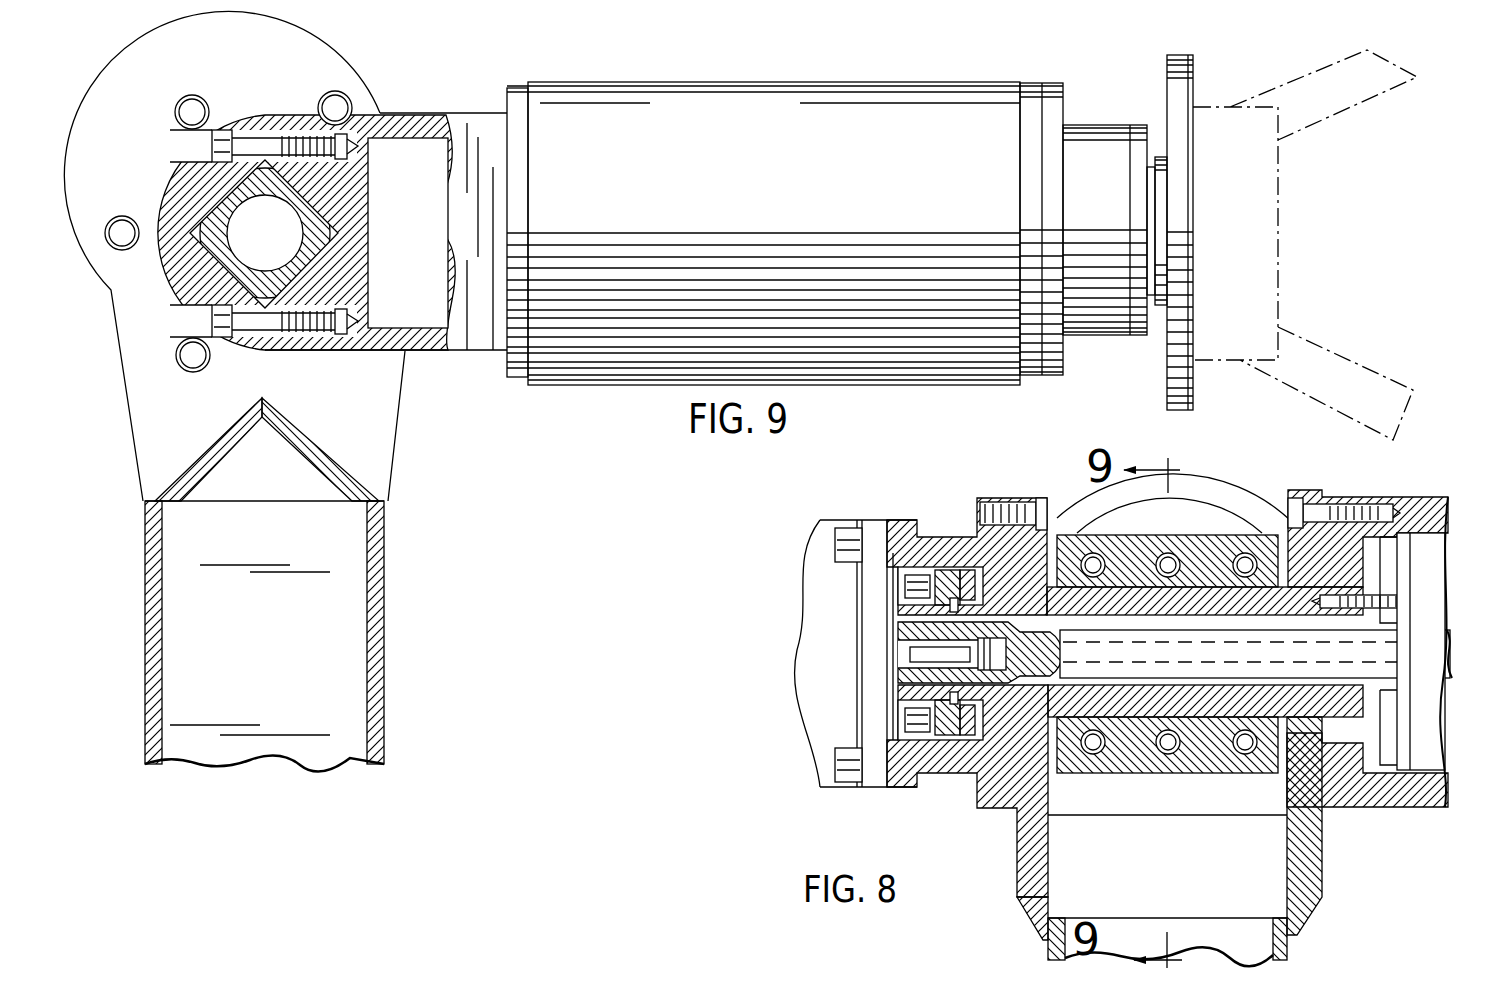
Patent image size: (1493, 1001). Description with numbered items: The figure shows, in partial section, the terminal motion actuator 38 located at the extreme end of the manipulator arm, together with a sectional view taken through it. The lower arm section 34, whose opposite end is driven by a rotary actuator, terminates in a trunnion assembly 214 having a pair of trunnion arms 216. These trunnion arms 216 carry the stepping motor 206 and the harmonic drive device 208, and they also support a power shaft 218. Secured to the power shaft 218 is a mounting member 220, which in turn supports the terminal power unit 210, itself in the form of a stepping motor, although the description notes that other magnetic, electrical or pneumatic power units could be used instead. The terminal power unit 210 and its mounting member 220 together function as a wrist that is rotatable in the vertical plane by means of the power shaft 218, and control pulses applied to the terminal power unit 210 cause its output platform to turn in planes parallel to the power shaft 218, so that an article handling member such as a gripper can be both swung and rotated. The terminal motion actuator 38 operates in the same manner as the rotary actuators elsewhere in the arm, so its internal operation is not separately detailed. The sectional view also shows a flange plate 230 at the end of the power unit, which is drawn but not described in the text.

In FIG. 8, the lower arm section 34 is at (1290, 950).
In FIG. 8, the terminal motion actuator 38 is at (778, 815).
In FIG. 8, the stepping motor 206 is at (833, 700).
In FIG. 8, the harmonic drive device 208 is at (1395, 795).
In FIG. 9, the terminal power unit 210 is at (665, 303).
In FIG. 8, the trunnion assembly 214 is at (990, 822).
In FIG. 8, the trunnion arms 216 is at (1308, 878).
In FIG. 9, the power shaft 218 is at (205, 255).
In FIG. 8, the power shaft 218 is at (1230, 740).
In FIG. 9, the mounting member 220 is at (424, 113).
In FIG. 8, the mounting member 220 is at (1213, 550).
In FIG. 9, the flange plate 230 is at (1183, 410).